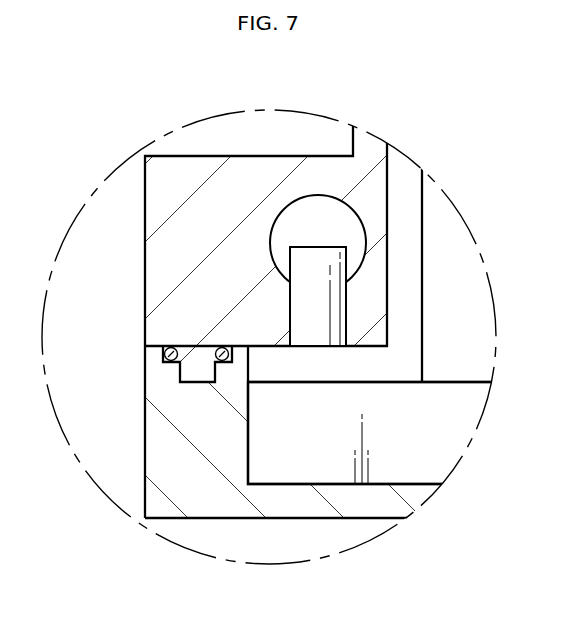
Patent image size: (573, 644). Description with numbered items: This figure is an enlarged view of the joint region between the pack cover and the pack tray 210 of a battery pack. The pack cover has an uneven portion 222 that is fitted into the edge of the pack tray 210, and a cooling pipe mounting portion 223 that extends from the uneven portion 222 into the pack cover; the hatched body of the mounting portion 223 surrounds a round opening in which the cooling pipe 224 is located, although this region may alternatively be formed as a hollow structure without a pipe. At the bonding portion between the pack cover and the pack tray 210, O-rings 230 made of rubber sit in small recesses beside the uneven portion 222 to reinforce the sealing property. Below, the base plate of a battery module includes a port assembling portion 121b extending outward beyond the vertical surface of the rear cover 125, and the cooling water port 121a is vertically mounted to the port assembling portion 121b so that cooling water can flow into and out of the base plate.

The cooling pipe mounting portion 223 is at (308, 176).
The cooling pipe 224 is at (297, 224).
The cooling water port 121a is at (310, 305).
The rear cover 125 is at (403, 182).
The pack tray 210 is at (360, 505).
The port assembling portion 121b is at (302, 443).
The uneven portion 222 is at (195, 369).
The O-ring 230 is at (168, 352).